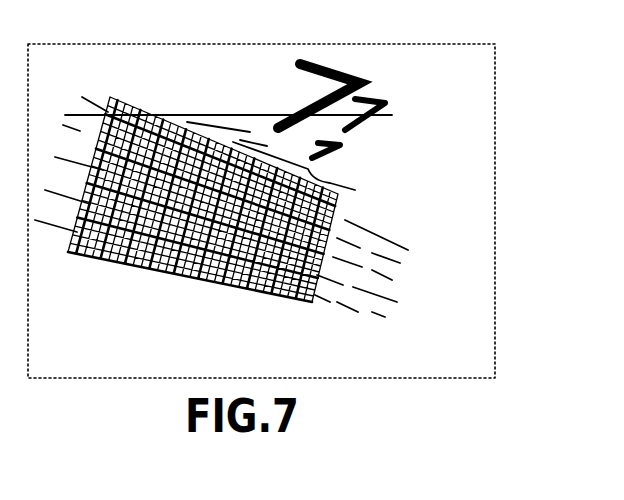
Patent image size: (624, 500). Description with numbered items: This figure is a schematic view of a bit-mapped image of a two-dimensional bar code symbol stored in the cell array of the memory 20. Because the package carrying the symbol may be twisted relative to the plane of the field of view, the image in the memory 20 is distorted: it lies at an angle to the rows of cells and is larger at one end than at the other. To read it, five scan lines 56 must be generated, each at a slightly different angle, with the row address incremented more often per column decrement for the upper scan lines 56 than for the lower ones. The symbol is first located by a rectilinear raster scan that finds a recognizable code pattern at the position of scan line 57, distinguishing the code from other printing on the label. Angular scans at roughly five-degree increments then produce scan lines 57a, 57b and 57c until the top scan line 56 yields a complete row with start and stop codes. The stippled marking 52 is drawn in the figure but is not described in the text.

The memory 20 is at (399, 44).
The scan line 57 is at (177, 115).
The scan line 57a is at (225, 127).
The scan line 57b is at (252, 132).
The scan line 57c is at (316, 175).
The character image 52 is at (328, 116).
The scan lines 56 is at (406, 251).